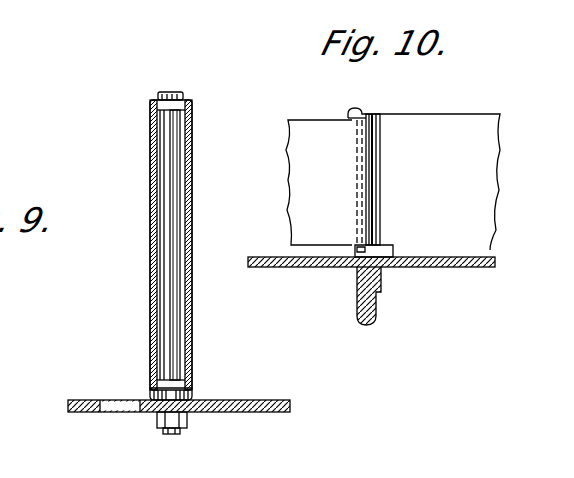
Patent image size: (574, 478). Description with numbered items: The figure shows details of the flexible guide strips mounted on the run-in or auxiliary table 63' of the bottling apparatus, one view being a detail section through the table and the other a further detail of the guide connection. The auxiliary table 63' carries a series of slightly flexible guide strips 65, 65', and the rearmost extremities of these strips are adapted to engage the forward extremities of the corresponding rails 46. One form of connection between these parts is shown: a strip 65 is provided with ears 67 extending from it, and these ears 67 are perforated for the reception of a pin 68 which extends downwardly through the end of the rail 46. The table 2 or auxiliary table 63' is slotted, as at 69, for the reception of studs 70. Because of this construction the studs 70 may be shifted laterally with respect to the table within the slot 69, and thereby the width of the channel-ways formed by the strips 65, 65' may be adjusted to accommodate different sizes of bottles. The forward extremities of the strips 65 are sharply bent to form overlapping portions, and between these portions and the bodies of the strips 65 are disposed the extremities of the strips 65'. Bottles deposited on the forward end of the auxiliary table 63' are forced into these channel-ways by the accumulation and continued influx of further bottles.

In FIG. 10, the base 2 is at (296, 267).
In FIG. 10, the rail 46 is at (291, 191).
In FIG. 10, the auxiliary table 63' is at (371, 291).
In FIG. 9, the guide strip 65 is at (146, 245).
In FIG. 10, the guide strip 65 is at (433, 182).
In FIG. 9, the guide strip 65' is at (195, 127).
In FIG. 10, the ear 67 is at (392, 102).
In FIG. 10, the pin 68 is at (358, 184).
In FIG. 9, the slot 69 is at (134, 394).
In FIG. 9, the stud 70 is at (172, 320).